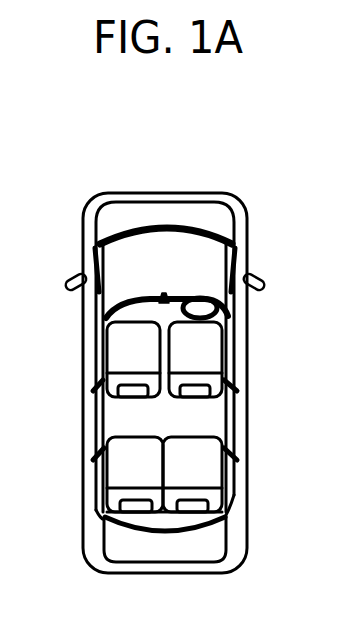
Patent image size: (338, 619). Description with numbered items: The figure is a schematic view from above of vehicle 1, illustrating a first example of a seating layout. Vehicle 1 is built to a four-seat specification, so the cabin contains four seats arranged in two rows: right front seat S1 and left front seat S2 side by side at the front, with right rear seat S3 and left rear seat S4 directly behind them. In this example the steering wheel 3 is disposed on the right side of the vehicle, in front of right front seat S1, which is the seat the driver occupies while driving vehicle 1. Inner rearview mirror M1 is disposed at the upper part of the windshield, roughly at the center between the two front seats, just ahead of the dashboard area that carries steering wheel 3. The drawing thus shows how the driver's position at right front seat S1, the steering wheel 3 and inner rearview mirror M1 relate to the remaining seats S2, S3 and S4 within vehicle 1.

The vehicle 1 is at (165, 193).
The steering wheel 3 is at (200, 296).
The inner rearview mirror M1 is at (150, 296).
The right front seat S1 is at (202, 356).
The left front seat S2 is at (128, 356).
The right rear seat S3 is at (202, 465).
The left rear seat S4 is at (128, 465).